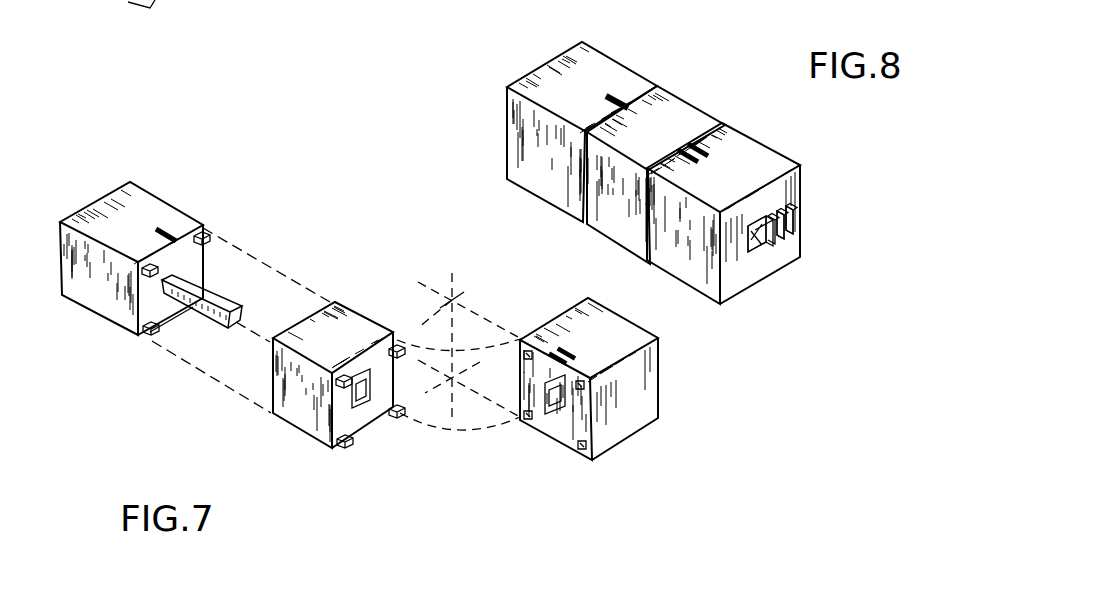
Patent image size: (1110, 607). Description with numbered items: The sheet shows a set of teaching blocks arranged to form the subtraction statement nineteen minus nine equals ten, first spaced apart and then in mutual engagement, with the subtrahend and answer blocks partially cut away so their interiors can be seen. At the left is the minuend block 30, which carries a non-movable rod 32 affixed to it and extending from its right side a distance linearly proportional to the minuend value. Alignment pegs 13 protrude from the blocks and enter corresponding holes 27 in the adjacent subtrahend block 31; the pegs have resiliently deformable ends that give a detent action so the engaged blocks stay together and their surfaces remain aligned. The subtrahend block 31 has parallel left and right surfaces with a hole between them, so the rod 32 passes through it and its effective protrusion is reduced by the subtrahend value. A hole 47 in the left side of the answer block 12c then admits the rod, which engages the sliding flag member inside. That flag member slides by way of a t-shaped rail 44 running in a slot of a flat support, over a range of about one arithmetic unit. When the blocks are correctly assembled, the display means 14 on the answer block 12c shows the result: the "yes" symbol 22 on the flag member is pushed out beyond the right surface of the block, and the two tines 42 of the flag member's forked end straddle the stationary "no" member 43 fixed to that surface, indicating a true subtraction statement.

In FIG. 7, the minuend block 30 is at (163, 208).
In FIG. 8, the minuend block 30 is at (632, 78).
In FIG. 7, the subtrahend block 31 is at (297, 416).
In FIG. 8, the subtrahend block 31 is at (693, 117).
In FIG. 7, the alignment pegs 13 is at (206, 237).
In FIG. 7, the non-movable rod 32 is at (220, 306).
In FIG. 7, the holes 27 is at (524, 356).
In FIG. 7, the hole 47 is at (555, 412).
In FIG. 7, the answer block 12c is at (637, 406).
In FIG. 8, the answer block 12c is at (780, 155).
In FIG. 8, the display means 14 is at (788, 215).
In FIG. 8, the tines 42 is at (774, 233).
In FIG. 8, the stationary "no" member 43 is at (781, 247).
In FIG. 8, the "yes" symbol 22 is at (760, 246).
In FIG. 7, the t-shaped rail 44 is at (155, 3).